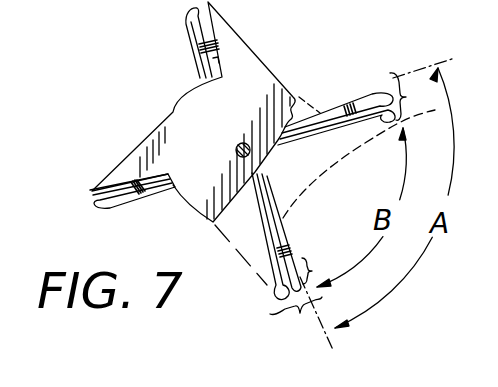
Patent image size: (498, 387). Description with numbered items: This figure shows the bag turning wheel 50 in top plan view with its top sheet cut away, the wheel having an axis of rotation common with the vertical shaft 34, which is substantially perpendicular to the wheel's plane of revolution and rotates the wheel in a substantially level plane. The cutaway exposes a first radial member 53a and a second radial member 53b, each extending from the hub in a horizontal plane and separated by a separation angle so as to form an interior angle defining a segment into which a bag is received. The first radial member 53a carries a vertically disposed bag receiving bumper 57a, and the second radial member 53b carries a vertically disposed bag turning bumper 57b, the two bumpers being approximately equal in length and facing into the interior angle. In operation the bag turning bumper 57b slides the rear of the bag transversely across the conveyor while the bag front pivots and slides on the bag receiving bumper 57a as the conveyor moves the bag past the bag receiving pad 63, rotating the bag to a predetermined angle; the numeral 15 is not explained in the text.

The body plate 15 is at (173, 113).
The vertical shaft 34 is at (236, 150).
The bag turning wheel 50 is at (277, 57).
The first radial member 53a is at (296, 320).
The second radial member 53b is at (358, 109).
The bag receiving bumper 57a is at (288, 233).
The bag turning bumper 57b is at (272, 274).
The bag receiving pad 63 is at (319, 271).